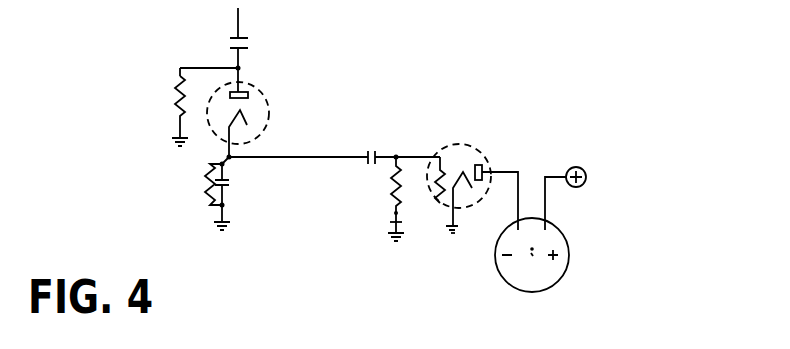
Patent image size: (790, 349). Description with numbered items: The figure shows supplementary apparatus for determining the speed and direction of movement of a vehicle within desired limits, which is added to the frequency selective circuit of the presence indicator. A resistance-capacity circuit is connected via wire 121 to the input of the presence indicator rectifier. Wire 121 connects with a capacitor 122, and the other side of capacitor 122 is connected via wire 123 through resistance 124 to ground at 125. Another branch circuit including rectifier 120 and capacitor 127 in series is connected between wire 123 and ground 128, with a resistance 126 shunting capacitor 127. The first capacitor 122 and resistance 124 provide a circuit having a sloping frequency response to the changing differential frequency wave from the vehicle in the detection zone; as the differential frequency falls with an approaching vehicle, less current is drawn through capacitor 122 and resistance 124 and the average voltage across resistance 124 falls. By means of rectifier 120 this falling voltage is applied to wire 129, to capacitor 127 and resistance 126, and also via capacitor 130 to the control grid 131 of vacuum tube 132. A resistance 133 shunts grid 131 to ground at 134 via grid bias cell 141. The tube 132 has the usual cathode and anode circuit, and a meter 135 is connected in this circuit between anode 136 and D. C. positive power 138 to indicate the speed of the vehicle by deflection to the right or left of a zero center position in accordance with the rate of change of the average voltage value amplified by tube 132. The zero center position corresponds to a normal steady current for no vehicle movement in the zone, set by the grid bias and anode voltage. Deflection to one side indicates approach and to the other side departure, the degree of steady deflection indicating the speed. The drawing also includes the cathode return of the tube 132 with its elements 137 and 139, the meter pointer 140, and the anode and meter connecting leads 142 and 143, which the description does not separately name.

The rectifier 120 is at (268, 110).
The wire 121 is at (238, 27).
The capacitor 122 is at (246, 50).
The wire 123 is at (220, 66).
The resistance 124 is at (175, 97).
The ground 125 is at (173, 142).
The resistance 126 is at (205, 180).
The capacitor 127 is at (231, 181).
The ground 128 is at (231, 229).
The wire 129 is at (320, 157).
The capacitor 130 is at (372, 152).
The control grid 131 is at (438, 198).
The vacuum tube 132 is at (455, 147).
The resistance 133 is at (392, 185).
The ground 134 is at (383, 251).
The meter 135 is at (512, 255).
The anode 136 is at (486, 169).
The ground 137 is at (435, 224).
The D. C. positive power 138 is at (593, 165).
The cathode connection 139 is at (436, 247).
The meter pointer 140 is at (532, 262).
The grid bias cell 141 is at (391, 223).
The anode conductor 142 is at (515, 198).
The meter conductor 143 is at (547, 201).